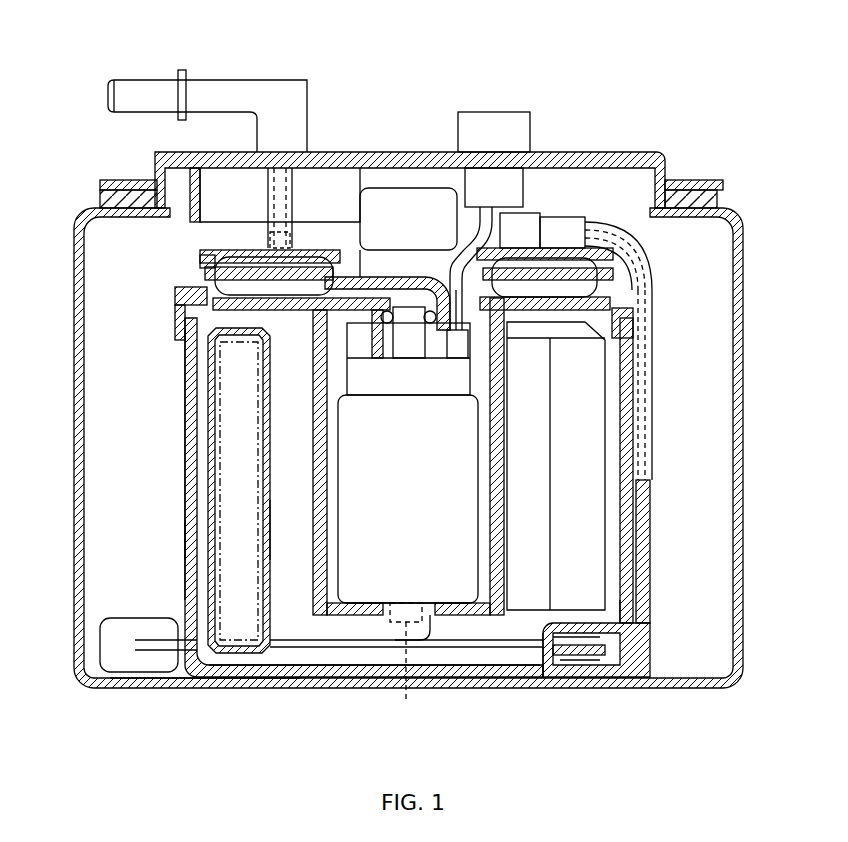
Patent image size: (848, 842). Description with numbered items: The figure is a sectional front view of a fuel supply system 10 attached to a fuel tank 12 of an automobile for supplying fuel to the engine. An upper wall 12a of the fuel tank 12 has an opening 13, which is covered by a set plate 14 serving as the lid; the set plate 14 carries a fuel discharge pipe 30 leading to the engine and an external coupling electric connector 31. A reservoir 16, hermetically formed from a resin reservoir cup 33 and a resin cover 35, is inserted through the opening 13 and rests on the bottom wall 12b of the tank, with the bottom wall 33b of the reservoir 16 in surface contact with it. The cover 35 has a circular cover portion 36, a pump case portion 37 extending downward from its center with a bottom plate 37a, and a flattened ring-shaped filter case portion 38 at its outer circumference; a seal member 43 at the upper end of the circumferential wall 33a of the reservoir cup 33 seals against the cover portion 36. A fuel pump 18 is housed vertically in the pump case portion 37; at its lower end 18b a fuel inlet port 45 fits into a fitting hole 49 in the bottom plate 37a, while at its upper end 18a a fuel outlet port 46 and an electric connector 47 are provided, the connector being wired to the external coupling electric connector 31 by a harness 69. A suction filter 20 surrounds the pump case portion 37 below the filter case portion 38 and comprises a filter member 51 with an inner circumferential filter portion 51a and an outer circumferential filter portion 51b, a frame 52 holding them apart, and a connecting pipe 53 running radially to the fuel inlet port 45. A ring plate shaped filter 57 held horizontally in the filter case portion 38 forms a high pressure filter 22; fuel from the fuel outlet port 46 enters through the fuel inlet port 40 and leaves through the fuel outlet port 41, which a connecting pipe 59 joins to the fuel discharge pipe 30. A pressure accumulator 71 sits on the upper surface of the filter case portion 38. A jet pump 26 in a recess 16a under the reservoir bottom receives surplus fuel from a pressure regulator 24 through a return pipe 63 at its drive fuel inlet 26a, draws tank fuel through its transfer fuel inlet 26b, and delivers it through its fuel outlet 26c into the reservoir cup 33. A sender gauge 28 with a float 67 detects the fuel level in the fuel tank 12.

The fuel supply system 10 is at (645, 90).
The fuel tank 12 is at (745, 275).
The upper wall 12a is at (122, 200).
The bottom wall 12b is at (148, 690).
The opening 13 is at (205, 190).
The set plate 14 is at (375, 152).
The reservoir 16 is at (172, 410).
The recess 16a is at (625, 598).
The fuel pump 18 is at (468, 572).
The upper end 18a is at (370, 372).
The lower end 18b is at (458, 600).
The suction filter 20 is at (614, 418).
The high pressure filter 22 is at (200, 262).
The pressure regulator 24 is at (560, 215).
The jet pump 26 is at (660, 662).
The drive fuel inlet 26a is at (645, 633).
The transfer fuel inlet 26b is at (608, 672).
The fuel outlet 26c is at (548, 648).
The sender gauge 28 is at (117, 617).
The fuel discharge pipe 30 is at (213, 95).
The external coupling electric connector 31 is at (510, 120).
The reservoir cup 33 is at (183, 495).
The circumferential wall 33a is at (190, 535).
The bottom wall 33b is at (218, 672).
The cover 35 is at (320, 245).
The cover portion 36 is at (612, 283).
The pump case portion 37 is at (500, 455).
The bottom plate 37a is at (350, 622).
The filter case portion 38 is at (215, 252).
The fuel inlet port 40 is at (384, 282).
The fuel outlet port 41 is at (280, 245).
The seal member 43 is at (185, 297).
The fuel inlet port 45 is at (405, 669).
The fuel outlet port 46 is at (408, 340).
The electric connector 47 is at (456, 332).
The fitting hole 49 is at (420, 600).
The filter member 51 is at (585, 385).
The inner circumferential filter portion 51a is at (270, 527).
The outer circumferential filter portion 51b is at (210, 572).
The frame 52 is at (235, 452).
The connecting pipe 53 is at (287, 630).
The ring plate shaped filter 57 is at (222, 275).
The connecting pipe 59 is at (280, 190).
The return pipe 63 is at (650, 515).
The float 67 is at (112, 645).
The harness 69 is at (476, 230).
The pressure accumulator 71 is at (431, 186).